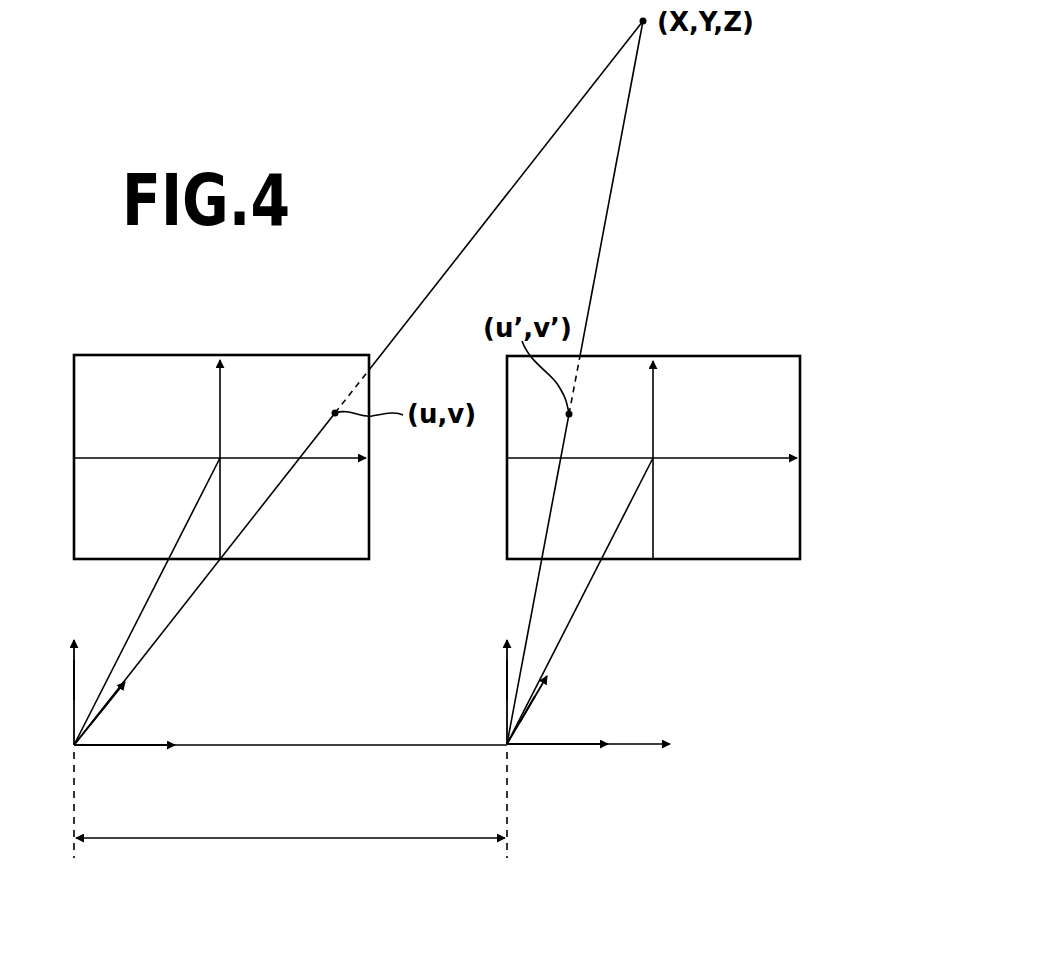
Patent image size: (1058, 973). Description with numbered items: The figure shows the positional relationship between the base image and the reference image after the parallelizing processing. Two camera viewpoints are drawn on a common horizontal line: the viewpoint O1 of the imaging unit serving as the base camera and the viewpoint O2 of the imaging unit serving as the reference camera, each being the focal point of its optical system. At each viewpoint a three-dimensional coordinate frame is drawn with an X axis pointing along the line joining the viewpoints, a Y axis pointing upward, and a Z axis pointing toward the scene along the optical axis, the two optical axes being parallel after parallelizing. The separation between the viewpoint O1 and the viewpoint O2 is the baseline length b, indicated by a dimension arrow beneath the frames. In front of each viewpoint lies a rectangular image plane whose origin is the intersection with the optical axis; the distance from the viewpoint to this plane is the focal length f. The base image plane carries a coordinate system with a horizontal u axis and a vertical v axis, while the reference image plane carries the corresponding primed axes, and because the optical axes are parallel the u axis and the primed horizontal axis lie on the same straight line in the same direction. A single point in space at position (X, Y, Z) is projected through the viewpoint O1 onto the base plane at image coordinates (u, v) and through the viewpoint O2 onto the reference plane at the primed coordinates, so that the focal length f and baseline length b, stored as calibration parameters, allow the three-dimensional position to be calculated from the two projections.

The viewpoint of base camera O1 is at (101, 749).
The viewpoint of reference camera O2 is at (588, 749).
The baseline length b is at (290, 821).
The focal length f is at (363, 601).
The u-axis u is at (454, 459).
The v-axis v is at (441, 439).
The X coordinate axis X is at (359, 766).
The Y coordinate axis Y is at (275, 666).
The Z coordinate axis Z is at (332, 700).